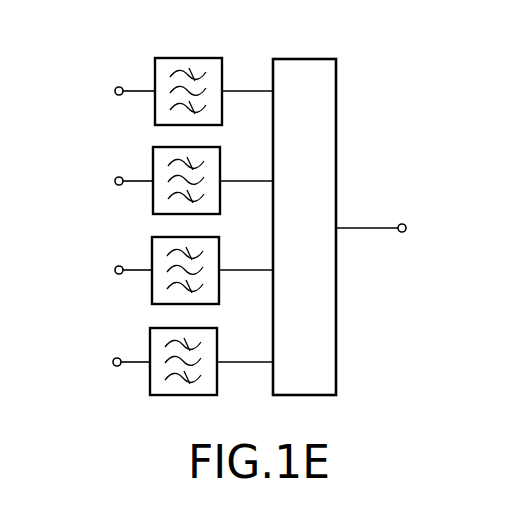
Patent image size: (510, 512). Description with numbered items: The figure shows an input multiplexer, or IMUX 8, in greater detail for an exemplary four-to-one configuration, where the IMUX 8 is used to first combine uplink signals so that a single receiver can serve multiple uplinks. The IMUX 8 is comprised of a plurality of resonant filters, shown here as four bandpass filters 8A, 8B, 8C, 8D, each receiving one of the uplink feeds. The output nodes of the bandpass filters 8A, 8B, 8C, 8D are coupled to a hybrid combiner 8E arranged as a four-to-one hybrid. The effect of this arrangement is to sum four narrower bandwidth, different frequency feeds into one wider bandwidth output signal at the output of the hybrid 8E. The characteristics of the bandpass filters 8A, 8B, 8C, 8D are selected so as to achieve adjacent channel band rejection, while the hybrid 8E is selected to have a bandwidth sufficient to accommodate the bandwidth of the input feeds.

The input multiplexer (IMUX) 8 is at (352, 62).
The bandpass filter 8A is at (180, 58).
The bandpass filter 8B is at (217, 147).
The bandpass filter 8C is at (216, 237).
The bandpass filter 8D is at (214, 328).
The hybrid combiner 8E is at (336, 137).